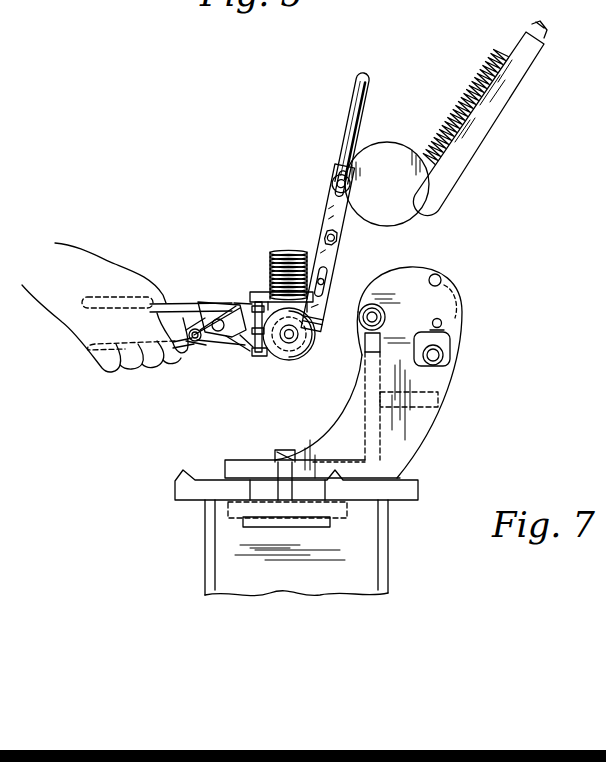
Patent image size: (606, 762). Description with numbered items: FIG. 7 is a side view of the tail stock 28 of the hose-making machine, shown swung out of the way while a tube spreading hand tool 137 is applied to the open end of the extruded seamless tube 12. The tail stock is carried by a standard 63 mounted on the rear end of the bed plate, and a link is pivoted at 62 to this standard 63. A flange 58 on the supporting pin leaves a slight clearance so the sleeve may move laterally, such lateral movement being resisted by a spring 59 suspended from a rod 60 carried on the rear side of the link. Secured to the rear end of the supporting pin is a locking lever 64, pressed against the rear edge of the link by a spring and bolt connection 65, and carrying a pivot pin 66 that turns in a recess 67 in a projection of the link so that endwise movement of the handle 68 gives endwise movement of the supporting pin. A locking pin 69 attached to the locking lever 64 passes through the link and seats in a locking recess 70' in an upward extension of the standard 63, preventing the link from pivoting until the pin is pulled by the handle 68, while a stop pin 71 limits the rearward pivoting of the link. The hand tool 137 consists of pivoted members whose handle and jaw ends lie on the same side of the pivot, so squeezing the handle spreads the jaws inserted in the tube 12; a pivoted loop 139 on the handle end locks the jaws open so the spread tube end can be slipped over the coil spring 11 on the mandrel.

The helically wound spring steel wire 11 is at (308, 266).
The extruded seamless tube 12 is at (287, 362).
The tail stock 28 is at (448, 396).
The flange 58 is at (346, 170).
The spring 59 is at (456, 113).
The rod 60 is at (546, 42).
The pivot 62 is at (447, 357).
The standard 63 is at (433, 429).
The locking lever 64 is at (412, 261).
The spring and bolt connection 65 is at (399, 238).
The pivot pin 66 is at (442, 332).
The recess 67 is at (456, 312).
The handle 68 is at (360, 106).
The locking pin 69 is at (410, 282).
The locking recess 70' is at (359, 339).
The stop pin 71 is at (441, 277).
The hand tool 137 is at (217, 297).
The pivoted loop 139 is at (206, 300).